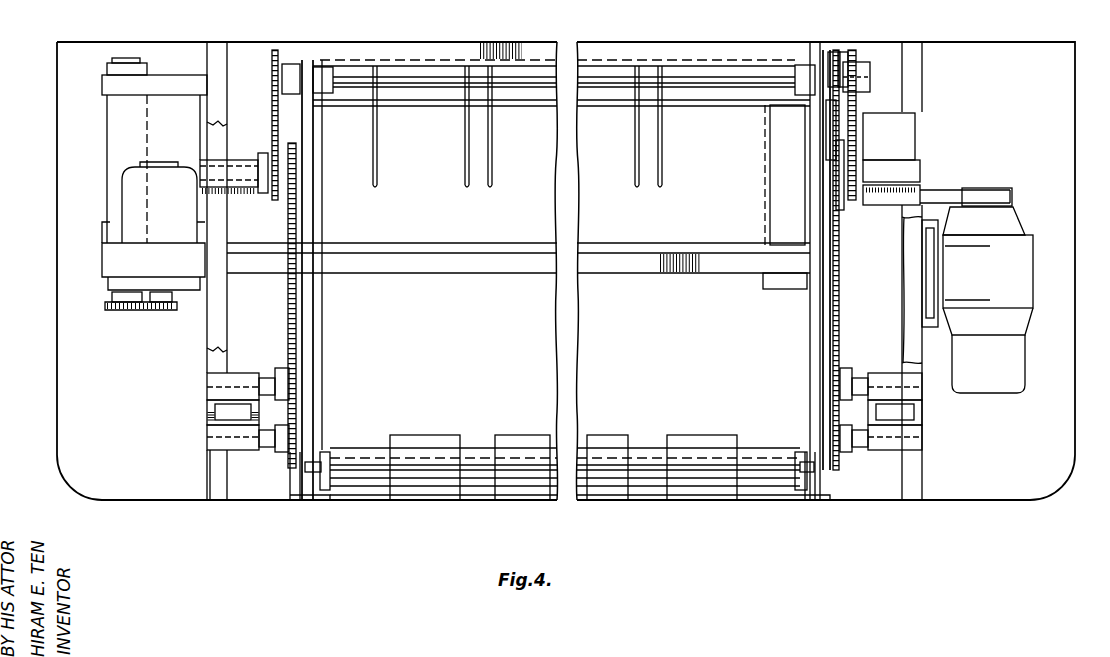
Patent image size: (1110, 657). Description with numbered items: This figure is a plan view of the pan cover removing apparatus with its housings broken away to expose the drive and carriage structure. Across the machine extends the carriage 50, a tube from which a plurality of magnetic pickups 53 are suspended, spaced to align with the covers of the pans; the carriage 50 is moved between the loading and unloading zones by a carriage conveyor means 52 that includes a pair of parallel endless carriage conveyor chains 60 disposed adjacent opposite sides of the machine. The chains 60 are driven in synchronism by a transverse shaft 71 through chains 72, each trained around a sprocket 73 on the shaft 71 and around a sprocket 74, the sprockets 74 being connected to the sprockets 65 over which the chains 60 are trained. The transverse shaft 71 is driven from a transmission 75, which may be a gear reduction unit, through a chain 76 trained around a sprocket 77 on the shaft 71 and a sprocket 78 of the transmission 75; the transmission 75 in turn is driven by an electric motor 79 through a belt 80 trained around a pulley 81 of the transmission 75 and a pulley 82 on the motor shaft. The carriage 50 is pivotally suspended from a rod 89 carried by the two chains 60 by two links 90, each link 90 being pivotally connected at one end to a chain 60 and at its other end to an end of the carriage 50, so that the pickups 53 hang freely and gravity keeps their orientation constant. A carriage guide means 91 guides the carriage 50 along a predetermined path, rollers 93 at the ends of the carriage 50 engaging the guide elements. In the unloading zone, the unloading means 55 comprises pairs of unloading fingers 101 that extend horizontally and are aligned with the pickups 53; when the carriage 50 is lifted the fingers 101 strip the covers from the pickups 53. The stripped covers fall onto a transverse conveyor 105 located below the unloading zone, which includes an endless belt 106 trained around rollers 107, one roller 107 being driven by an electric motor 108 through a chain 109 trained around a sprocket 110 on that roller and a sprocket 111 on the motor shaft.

The carriage 50 is at (768, 490).
The carriage conveyor means 52 is at (300, 350).
The magnetic pickups 53 is at (437, 495).
The unloading means 55 is at (662, 118).
The carriage conveyor chains 60 is at (298, 330).
The sprocket 65 is at (294, 166).
The transverse shaft 71 is at (411, 77).
The chains 72 is at (277, 53).
The sprockets 73 is at (308, 58).
The sprockets 74 is at (263, 192).
The transmission 75 is at (912, 128).
The chain 76 is at (840, 62).
The sprocket 77 is at (833, 83).
The sprocket 78 is at (843, 135).
The electric motor 79 is at (1030, 284).
The belt 80 is at (950, 193).
The pulley 81 is at (899, 206).
The pulley 82 is at (1018, 191).
The rod 89 is at (378, 480).
The links 90 is at (330, 490).
The carriage guide means 91 is at (311, 503).
The rollers 93 is at (320, 462).
The unloading fingers 101 is at (377, 185).
The transverse conveyor 105 is at (118, 168).
The endless belt 106 is at (115, 144).
The rollers 107 is at (147, 125).
The electric motor 108 is at (125, 226).
The chain 109 is at (134, 316).
The sprocket 110 is at (110, 300).
The sprocket 111 is at (172, 313).